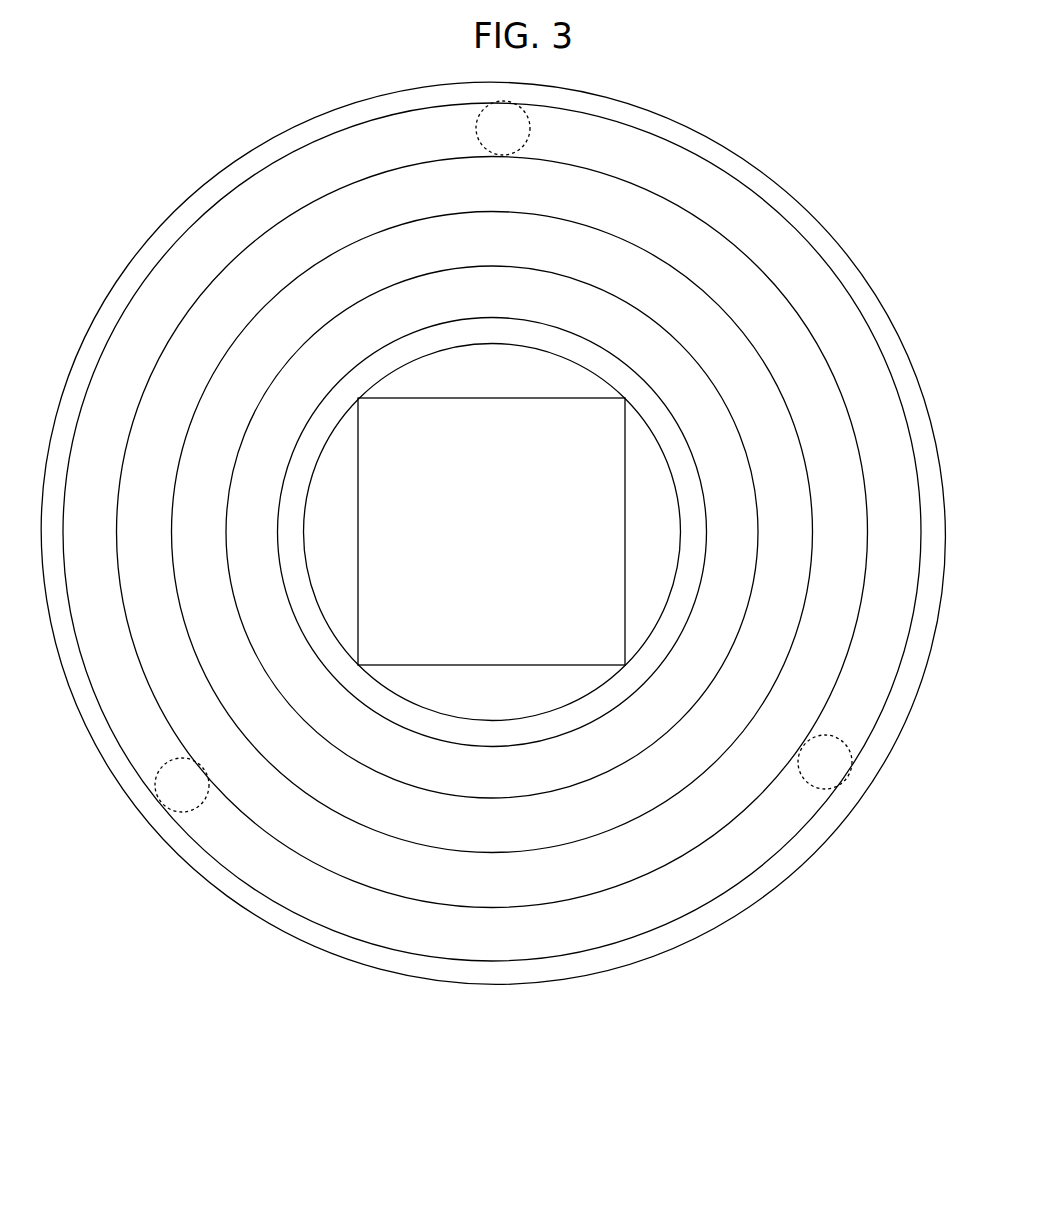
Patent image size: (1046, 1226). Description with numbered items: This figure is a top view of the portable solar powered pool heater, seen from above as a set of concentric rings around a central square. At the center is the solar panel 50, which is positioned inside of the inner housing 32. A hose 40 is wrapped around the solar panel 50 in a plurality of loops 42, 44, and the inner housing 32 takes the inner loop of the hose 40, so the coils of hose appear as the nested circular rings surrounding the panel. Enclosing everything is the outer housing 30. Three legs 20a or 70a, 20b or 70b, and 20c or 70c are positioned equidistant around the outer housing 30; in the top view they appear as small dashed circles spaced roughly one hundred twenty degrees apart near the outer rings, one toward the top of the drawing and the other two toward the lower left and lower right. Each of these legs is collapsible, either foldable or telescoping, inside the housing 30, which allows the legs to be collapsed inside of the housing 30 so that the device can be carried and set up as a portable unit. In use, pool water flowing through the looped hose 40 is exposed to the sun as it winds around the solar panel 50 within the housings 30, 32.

The outer housing 30 is at (755, 168).
The inner housing 32 is at (682, 450).
The hose 40 is at (492, 600).
The loop 42 is at (492, 623).
The loop 44 is at (533, 650).
The solar panel 50 is at (592, 743).
The leg 20a is at (444, 101).
The leg 70a is at (503, 128).
The leg 20b is at (139, 817).
The leg 70b is at (170, 792).
The leg 20c is at (879, 796).
The leg 70c is at (835, 768).